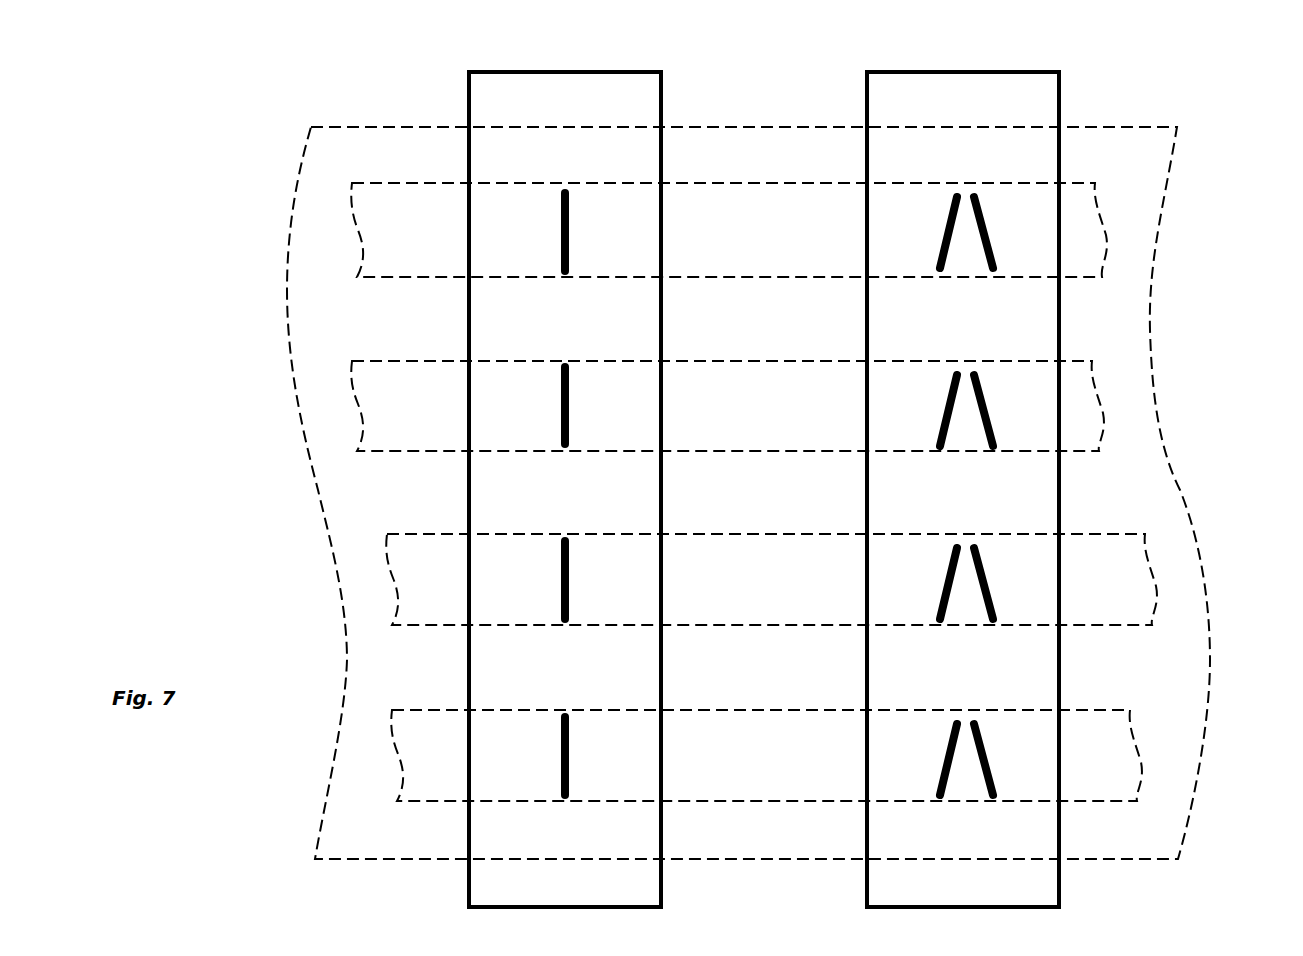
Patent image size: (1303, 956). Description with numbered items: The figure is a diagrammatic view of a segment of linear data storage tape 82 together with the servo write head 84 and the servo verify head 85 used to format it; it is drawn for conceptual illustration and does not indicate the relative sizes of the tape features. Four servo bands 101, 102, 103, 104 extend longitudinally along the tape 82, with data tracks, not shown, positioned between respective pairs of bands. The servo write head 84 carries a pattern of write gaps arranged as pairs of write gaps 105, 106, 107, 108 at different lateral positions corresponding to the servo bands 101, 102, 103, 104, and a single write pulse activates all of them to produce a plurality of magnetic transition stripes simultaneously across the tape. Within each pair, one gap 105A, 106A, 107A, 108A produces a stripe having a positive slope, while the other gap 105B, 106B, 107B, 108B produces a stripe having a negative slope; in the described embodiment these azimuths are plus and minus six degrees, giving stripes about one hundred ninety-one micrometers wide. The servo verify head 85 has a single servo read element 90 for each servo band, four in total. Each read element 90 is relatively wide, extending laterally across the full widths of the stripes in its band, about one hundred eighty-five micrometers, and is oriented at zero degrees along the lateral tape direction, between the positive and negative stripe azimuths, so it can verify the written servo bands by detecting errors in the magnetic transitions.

The linear data storage tape 82 is at (622, 137).
The servo write head 84 is at (990, 83).
The servo verify head 85 is at (586, 83).
The servo read element 90 is at (570, 208).
The servo band 101 is at (1085, 211).
The servo band 102 is at (1085, 370).
The servo band 103 is at (1128, 555).
The servo band 104 is at (1120, 717).
The pair of write gaps 105 is at (1013, 207).
The write gap 105A is at (948, 215).
The write gap 105B is at (993, 233).
The pair of write gaps 106 is at (1026, 379).
The write gap 106A is at (948, 392).
The write gap 106B is at (978, 386).
The pair of write gaps 107 is at (1030, 560).
The write gap 107A is at (948, 573).
The write gap 107B is at (993, 581).
The pair of write gaps 108 is at (1032, 737).
The write gap 108A is at (948, 745).
The write gap 108B is at (993, 770).